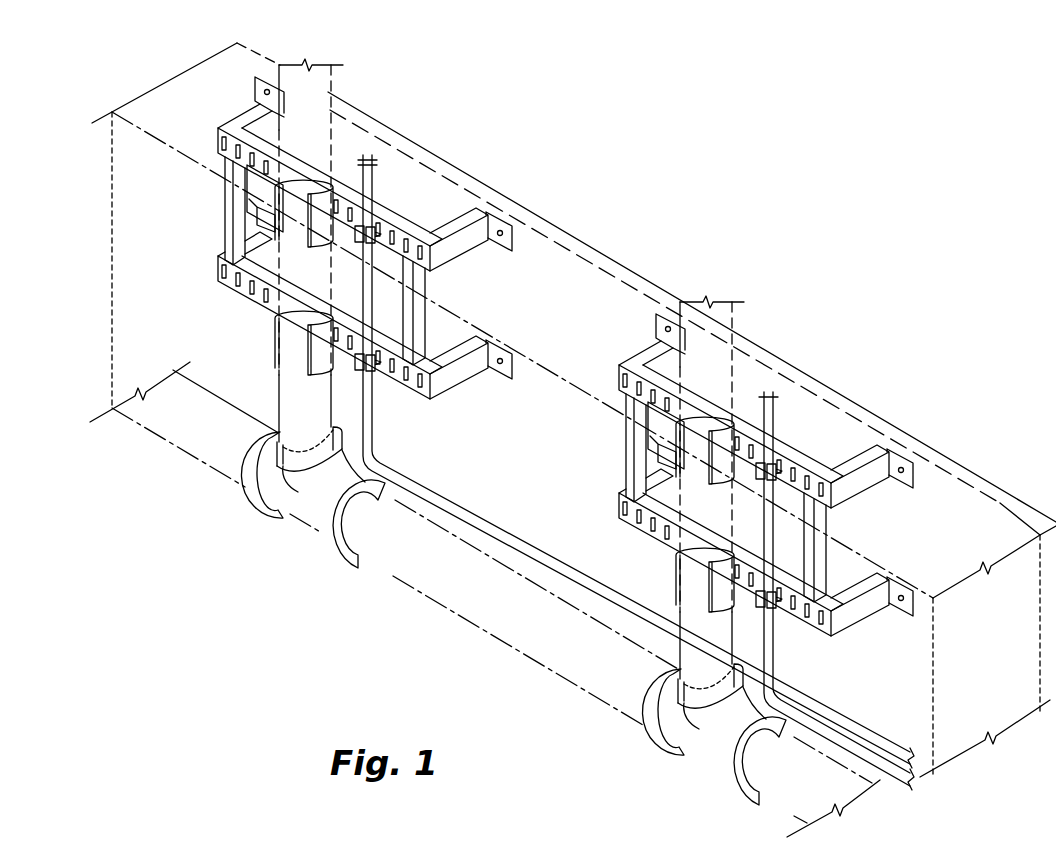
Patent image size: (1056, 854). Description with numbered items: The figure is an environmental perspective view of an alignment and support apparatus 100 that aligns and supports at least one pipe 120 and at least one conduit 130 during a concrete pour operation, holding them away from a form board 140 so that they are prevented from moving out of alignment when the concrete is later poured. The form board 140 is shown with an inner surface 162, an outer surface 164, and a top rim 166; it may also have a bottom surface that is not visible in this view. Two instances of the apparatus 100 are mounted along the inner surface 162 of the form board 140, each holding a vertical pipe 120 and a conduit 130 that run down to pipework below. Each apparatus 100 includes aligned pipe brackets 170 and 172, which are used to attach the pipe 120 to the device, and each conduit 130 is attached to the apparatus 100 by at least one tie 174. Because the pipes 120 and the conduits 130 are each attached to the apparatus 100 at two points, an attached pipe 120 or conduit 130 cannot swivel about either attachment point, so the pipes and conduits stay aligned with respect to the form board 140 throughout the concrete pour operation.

The alignment and support apparatus 100 is at (538, 115).
The pipe 120 is at (330, 84).
The conduit 130 is at (374, 150).
The form board 140 is at (548, 226).
The inner surface 162 is at (598, 322).
The outer surface 164 is at (368, 178).
The top rim 166 is at (962, 478).
The pipe bracket 170 is at (280, 220).
The pipe bracket 172 is at (290, 333).
The tie 174 is at (372, 232).